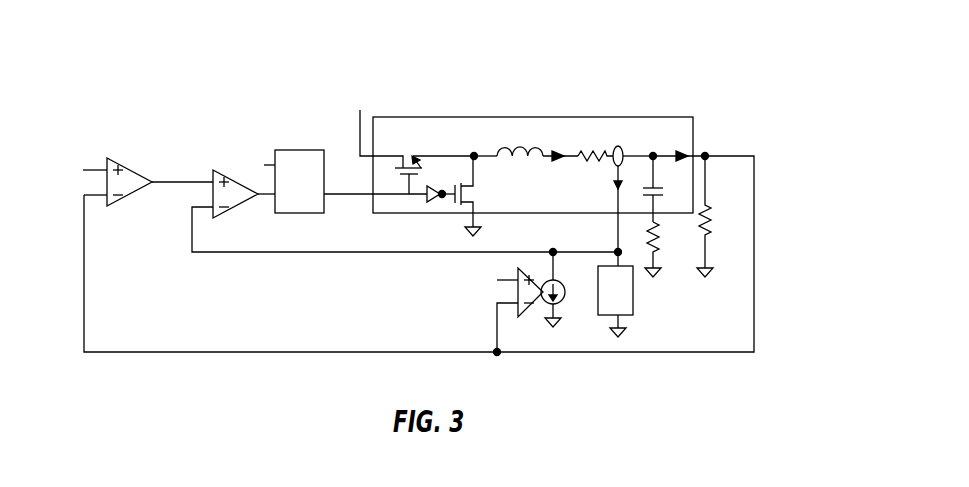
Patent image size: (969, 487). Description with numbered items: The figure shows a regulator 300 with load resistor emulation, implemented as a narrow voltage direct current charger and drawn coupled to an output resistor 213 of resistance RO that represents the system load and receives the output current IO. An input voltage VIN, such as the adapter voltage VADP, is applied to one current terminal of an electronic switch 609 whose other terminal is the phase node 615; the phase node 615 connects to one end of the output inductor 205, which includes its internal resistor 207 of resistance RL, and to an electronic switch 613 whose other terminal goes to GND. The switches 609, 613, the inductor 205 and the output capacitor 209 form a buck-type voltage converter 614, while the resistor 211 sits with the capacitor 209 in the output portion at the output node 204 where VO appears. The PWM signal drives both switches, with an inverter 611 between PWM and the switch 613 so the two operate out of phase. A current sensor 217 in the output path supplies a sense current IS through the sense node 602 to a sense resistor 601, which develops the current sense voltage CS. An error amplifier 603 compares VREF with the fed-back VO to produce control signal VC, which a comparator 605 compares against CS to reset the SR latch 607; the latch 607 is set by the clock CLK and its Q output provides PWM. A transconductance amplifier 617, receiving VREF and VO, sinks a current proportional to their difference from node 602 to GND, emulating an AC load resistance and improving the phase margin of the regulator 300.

The regulator 300 is at (145, 66).
The error amplifier 603 is at (134, 192).
The comparator 605 is at (213, 172).
The set-reset (SR) latch 607 is at (297, 150).
The sense node 602 is at (335, 253).
The voltage converter 614 is at (417, 117).
The electronic switch 609 is at (419, 158).
The inverter 611 is at (438, 196).
The electronic switch 613 is at (456, 197).
The phase node 615 is at (474, 153).
The output inductor 205 is at (520, 149).
The internal resistor 207 is at (601, 150).
The current sensor 217 is at (620, 146).
The output node 204 is at (708, 156).
The capacitor 209 is at (642, 189).
The resistor 211 is at (650, 236).
The output resistor 213 is at (710, 230).
The sense resistor 601 is at (634, 285).
The transconductance amplifier 617 is at (522, 318).